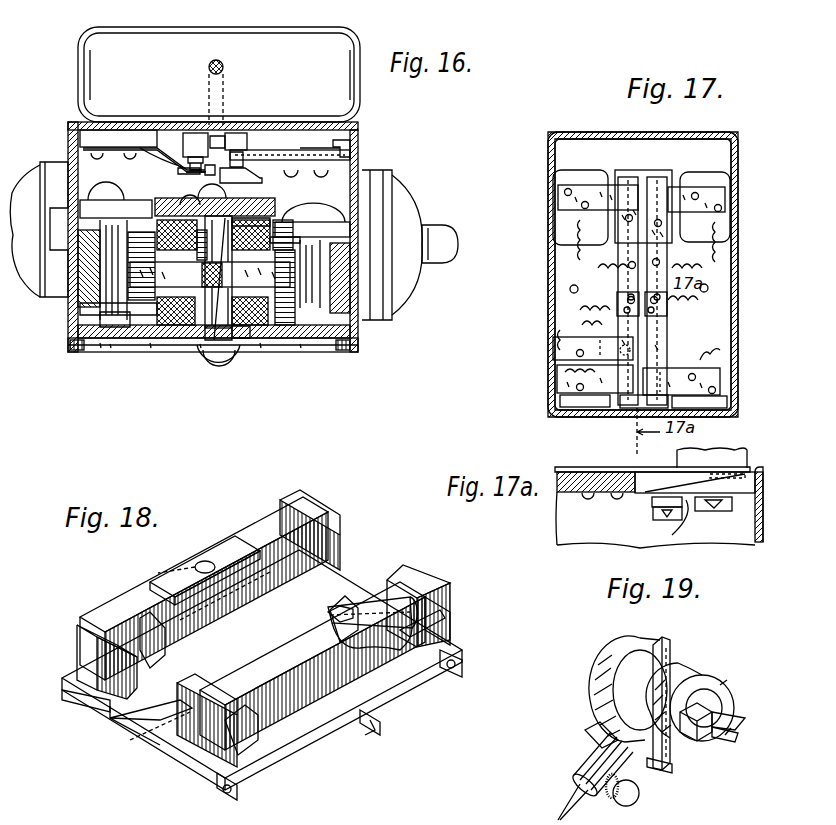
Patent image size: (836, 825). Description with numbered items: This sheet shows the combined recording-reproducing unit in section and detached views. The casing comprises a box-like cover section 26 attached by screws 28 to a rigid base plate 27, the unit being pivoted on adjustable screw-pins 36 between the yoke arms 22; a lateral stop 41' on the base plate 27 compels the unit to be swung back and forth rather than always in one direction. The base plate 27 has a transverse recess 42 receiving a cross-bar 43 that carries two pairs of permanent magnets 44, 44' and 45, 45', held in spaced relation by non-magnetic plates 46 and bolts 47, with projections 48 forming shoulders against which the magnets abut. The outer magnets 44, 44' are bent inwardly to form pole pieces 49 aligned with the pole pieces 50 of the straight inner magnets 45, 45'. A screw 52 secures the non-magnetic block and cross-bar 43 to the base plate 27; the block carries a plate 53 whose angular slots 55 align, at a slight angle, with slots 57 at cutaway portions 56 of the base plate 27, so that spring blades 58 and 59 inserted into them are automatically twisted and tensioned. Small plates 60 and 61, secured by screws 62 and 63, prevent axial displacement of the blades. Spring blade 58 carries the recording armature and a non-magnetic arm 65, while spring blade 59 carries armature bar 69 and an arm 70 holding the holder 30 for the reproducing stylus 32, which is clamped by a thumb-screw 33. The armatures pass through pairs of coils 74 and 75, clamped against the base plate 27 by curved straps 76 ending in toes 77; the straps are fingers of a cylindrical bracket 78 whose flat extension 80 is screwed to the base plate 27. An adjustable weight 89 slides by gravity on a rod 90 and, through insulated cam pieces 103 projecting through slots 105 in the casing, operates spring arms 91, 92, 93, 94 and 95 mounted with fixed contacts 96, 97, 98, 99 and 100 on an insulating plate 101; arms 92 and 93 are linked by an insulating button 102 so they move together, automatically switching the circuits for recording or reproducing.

In FIG. 16, the yoke arms 22 is at (14, 207).
In FIG. 16, the cover section 26 is at (358, 150).
In FIG. 17, the cover section 26 is at (738, 319).
In FIG. 17A, the cover section 26 is at (763, 520).
In FIG. 16, the base plate 27 is at (280, 330).
In FIG. 18, the base plate 27 is at (345, 600).
In FIG. 16, the screws 28 is at (68, 343).
In FIG. 19, the holder 30 is at (637, 770).
In FIG. 19, the reproducing stylus 32 is at (573, 800).
In FIG. 19, the thumb-screw 33 is at (634, 795).
In FIG. 16, the pins 36 is at (452, 230).
In FIG. 18, the stop 41' is at (262, 670).
In FIG. 18, the transverse recess 42 is at (350, 730).
In FIG. 16, the cross-bar 43 is at (138, 318).
In FIG. 18, the cross-bar 43 is at (330, 740).
In FIG. 16, the outer permanent magnet 44 is at (63, 286).
In FIG. 18, the outer permanent magnet 44 is at (204, 583).
In FIG. 16, the outer permanent magnet 44' is at (390, 278).
In FIG. 18, the outer permanent magnet 44' is at (459, 621).
In FIG. 16, the inner permanent magnet 45 is at (124, 198).
In FIG. 18, the inner permanent magnet 45 is at (312, 666).
In FIG. 16, the inner permanent magnet 45' is at (212, 253).
In FIG. 18, the inner permanent magnet 45' is at (225, 607).
In FIG. 16, the non-magnetic plates 46 is at (90, 208).
In FIG. 18, the non-magnetic plates 46 is at (168, 565).
In FIG. 16, the bolts 47 is at (110, 222).
In FIG. 18, the bolts 47 is at (203, 560).
In FIG. 16, the projections 48 is at (110, 310).
In FIG. 18, the pole pieces 49 is at (320, 535).
In FIG. 18, the pole pieces 50 is at (280, 520).
In FIG. 16, the screw 52 is at (218, 362).
In FIG. 16, the plate 53 is at (280, 204).
In FIG. 16, the slots 55 is at (270, 216).
In FIG. 18, the cutaway portions 56 is at (428, 628).
In FIG. 16, the slots 57 is at (196, 332).
In FIG. 18, the slots 57 is at (365, 595).
In FIG. 16, the spring blade 58 is at (190, 315).
In FIG. 19, the spring blade 59 is at (670, 648).
In FIG. 16, the plates 60 is at (240, 206).
In FIG. 16, the plates 61 is at (206, 330).
In FIG. 16, the screws 62 is at (196, 168).
In FIG. 16, the screws 63 is at (240, 332).
In FIG. 16, the non-magnetic arm 65 is at (305, 330).
In FIG. 19, the armature bar 69 is at (707, 733).
In FIG. 19, the arm 70 is at (615, 728).
In FIG. 16, the coils 74 is at (182, 322).
In FIG. 19, the coils 75 is at (622, 703).
In FIG. 16, the curved flexible straps 76 is at (296, 210).
In FIG. 19, the curved flexible straps 76 is at (612, 655).
In FIG. 19, the toes 77 is at (593, 728).
In FIG. 19, the cylindrical bracket 78 is at (738, 734).
In FIG. 19, the flat extension 80 is at (745, 716).
In FIG. 16, the adjustable weight 89 is at (198, 46).
In FIG. 17A, the adjustable weight 89 is at (748, 452).
In FIG. 16, the rod 90 is at (220, 60).
In FIG. 16, the spring arm 91 is at (200, 165).
In FIG. 17, the spring arm 91 is at (672, 306).
In FIG. 16, the spring arm 92 is at (250, 160).
In FIG. 17, the spring arm 92 is at (617, 303).
In FIG. 17A, the spring arm 92 is at (648, 492).
In FIG. 16, the spring arm 93 is at (262, 165).
In FIG. 17A, the spring arm 93 is at (652, 503).
In FIG. 17, the spring arm 94 is at (668, 243).
In FIG. 17, the spring arm 95 is at (618, 243).
In FIG. 16, the fixed contact 96 is at (160, 152).
In FIG. 17, the fixed contact 96 is at (722, 381).
In FIG. 16, the fixed contact 97 is at (345, 150).
In FIG. 17, the fixed contact 97 is at (557, 380).
In FIG. 17A, the fixed contact 97 is at (716, 512).
In FIG. 16, the fixed contact 98 is at (262, 178).
In FIG. 17A, the fixed contact 98 is at (655, 516).
In FIG. 17, the fixed contact 99 is at (703, 190).
In FIG. 17, the fixed contact 100 is at (585, 190).
In FIG. 16, the insulating plate 101 is at (340, 140).
In FIG. 17, the insulating plate 101 is at (715, 269).
In FIG. 17A, the insulating plate 101 is at (598, 470).
In FIG. 17A, the insulating button 102 is at (680, 522).
In FIG. 16, the cam pieces 103 is at (195, 130).
In FIG. 17, the cam pieces 103 is at (738, 403).
In FIG. 17A, the cam pieces 103 is at (720, 490).
In FIG. 16, the slots 105 is at (226, 152).
In FIG. 17, the slots 105 is at (645, 170).
In FIG. 17A, the slots 105 is at (700, 478).